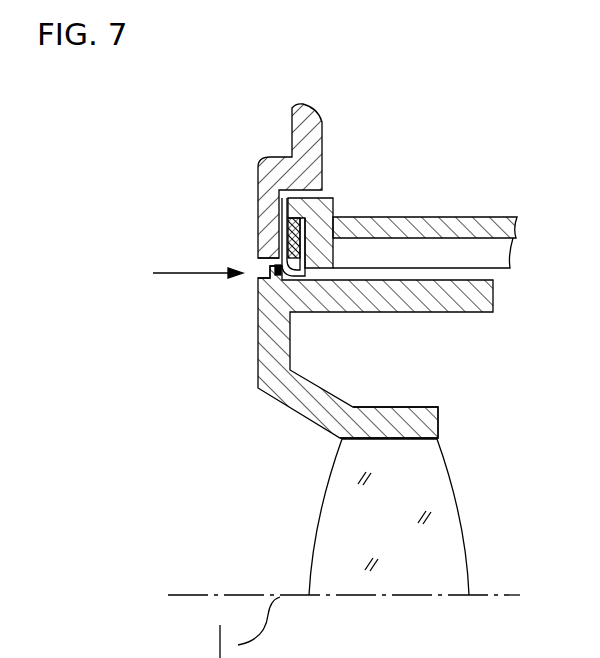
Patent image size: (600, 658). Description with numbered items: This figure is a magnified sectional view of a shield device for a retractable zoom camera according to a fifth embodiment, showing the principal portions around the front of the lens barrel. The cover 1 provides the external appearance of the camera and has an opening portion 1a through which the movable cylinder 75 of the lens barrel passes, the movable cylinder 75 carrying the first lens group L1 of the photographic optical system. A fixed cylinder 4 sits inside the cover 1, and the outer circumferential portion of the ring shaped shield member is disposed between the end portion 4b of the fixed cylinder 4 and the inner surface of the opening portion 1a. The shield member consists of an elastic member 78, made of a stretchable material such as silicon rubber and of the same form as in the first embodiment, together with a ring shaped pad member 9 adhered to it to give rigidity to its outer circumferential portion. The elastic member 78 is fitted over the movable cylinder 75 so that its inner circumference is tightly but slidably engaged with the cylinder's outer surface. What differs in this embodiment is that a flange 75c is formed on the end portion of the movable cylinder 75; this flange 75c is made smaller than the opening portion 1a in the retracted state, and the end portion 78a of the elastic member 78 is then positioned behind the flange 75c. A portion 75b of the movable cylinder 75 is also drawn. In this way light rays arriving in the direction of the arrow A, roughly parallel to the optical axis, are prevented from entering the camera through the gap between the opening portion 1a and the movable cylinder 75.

The cover 1 is at (298, 133).
The opening portion 1a is at (256, 262).
The pad member 9 is at (258, 207).
The elastic member 78 is at (288, 224).
The end portion 78a is at (276, 282).
The fixed cylinder 4 is at (472, 228).
The end portion 4b is at (328, 200).
The movable cylinder 75 is at (300, 400).
The holder flange 75b is at (407, 412).
The flange 75c is at (270, 272).
The first lens group L1 is at (337, 547).
The arrow A is at (183, 271).